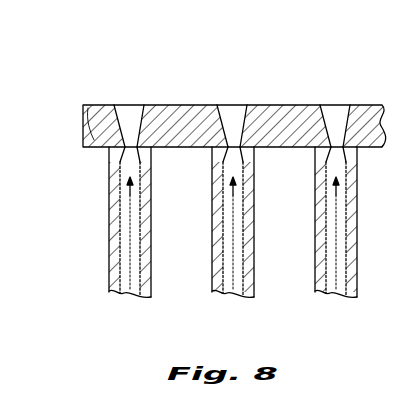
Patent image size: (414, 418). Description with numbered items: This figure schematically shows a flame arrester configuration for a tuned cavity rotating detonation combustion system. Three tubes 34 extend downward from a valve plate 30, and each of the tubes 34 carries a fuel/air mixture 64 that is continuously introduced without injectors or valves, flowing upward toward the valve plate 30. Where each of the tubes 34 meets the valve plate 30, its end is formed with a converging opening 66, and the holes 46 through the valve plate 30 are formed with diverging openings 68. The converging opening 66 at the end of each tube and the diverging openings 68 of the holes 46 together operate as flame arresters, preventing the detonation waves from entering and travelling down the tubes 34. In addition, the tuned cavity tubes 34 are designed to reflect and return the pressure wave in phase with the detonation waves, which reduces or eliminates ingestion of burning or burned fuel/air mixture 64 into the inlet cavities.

The valve plate 30 is at (371, 126).
The holes 46 is at (129, 113).
The diverging openings 68 is at (130, 141).
The converging opening 66 is at (128, 157).
The tubes 34 is at (123, 253).
The fuel/air mixture 64 is at (122, 289).